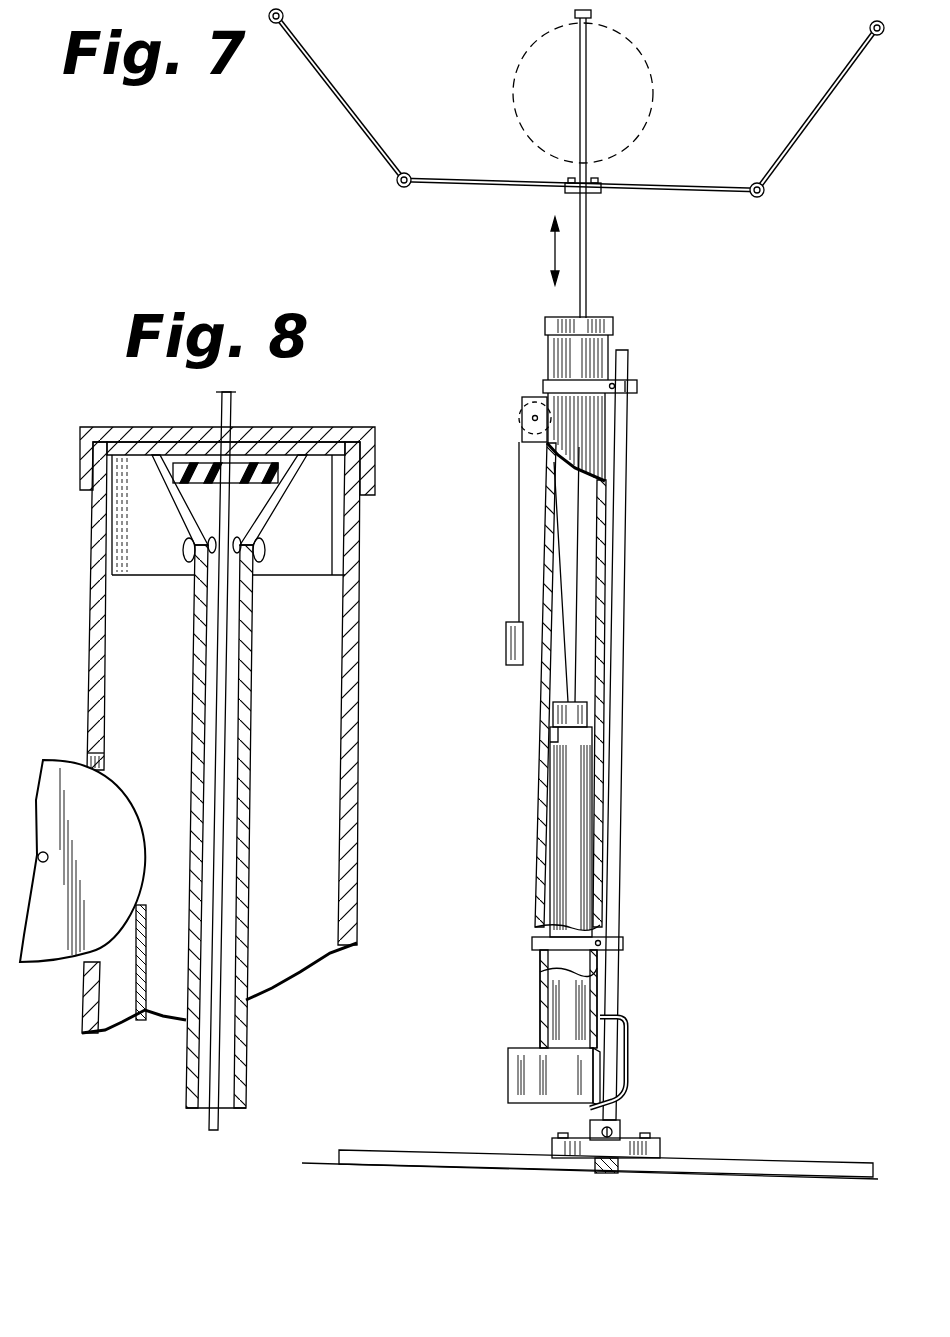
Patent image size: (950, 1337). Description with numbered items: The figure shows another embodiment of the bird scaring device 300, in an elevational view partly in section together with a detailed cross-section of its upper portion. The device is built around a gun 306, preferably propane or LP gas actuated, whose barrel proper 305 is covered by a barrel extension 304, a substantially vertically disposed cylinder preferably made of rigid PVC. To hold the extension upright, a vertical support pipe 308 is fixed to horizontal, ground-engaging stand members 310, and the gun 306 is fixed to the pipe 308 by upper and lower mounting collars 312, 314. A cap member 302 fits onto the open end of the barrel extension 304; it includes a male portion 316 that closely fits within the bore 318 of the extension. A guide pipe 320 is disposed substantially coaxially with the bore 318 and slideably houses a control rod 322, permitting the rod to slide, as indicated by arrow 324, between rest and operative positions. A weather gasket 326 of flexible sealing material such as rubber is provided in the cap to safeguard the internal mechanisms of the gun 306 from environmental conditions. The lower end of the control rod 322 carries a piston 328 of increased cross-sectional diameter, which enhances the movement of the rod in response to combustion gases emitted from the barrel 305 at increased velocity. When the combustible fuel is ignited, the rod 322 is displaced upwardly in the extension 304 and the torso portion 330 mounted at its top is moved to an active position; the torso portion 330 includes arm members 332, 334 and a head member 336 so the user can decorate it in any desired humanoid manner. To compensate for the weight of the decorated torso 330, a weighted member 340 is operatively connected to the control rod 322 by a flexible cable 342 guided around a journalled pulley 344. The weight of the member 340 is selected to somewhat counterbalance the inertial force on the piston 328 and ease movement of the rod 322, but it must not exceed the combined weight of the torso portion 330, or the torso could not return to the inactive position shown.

In FIG. 7, the bird scaring device 300 is at (720, 503).
In FIG. 7, the cap member 302 is at (612, 325).
In FIG. 8, the cap member 302 is at (332, 437).
In FIG. 7, the barrel extension 304 is at (538, 805).
In FIG. 8, the barrel extension 304 is at (93, 568).
In FIG. 7, the barrel proper 305 is at (583, 808).
In FIG. 7, the gun 306 is at (519, 1012).
In FIG. 7, the vertical support pipe 308 is at (626, 688).
In FIG. 7, the stand members 310 is at (398, 1140).
In FIG. 7, the mounting collar 312 is at (548, 378).
In FIG. 7, the mounting collar 314 is at (540, 940).
In FIG. 8, the male portion 316 is at (330, 530).
In FIG. 8, the bore 318 is at (106, 678).
In FIG. 8, the guide pipe 320 is at (246, 748).
In FIG. 7, the control rod 322 is at (587, 275).
In FIG. 8, the control rod 322 is at (233, 418).
In FIG. 7, the arrow 324 is at (550, 246).
In FIG. 8, the weather gasket 326 is at (193, 463).
In FIG. 7, the piston 328 is at (578, 718).
In FIG. 7, the torso portion 330 is at (576, 103).
In FIG. 7, the arm member 332 is at (387, 158).
In FIG. 7, the arm member 334 is at (800, 143).
In FIG. 7, the head member 336 is at (587, 120).
In FIG. 7, the weighted member 340 is at (506, 650).
In FIG. 7, the flexible cable 342 is at (517, 520).
In FIG. 8, the flexible cable 342 is at (103, 985).
In FIG. 7, the pulley 344 is at (521, 420).
In FIG. 8, the pulley 344 is at (120, 793).